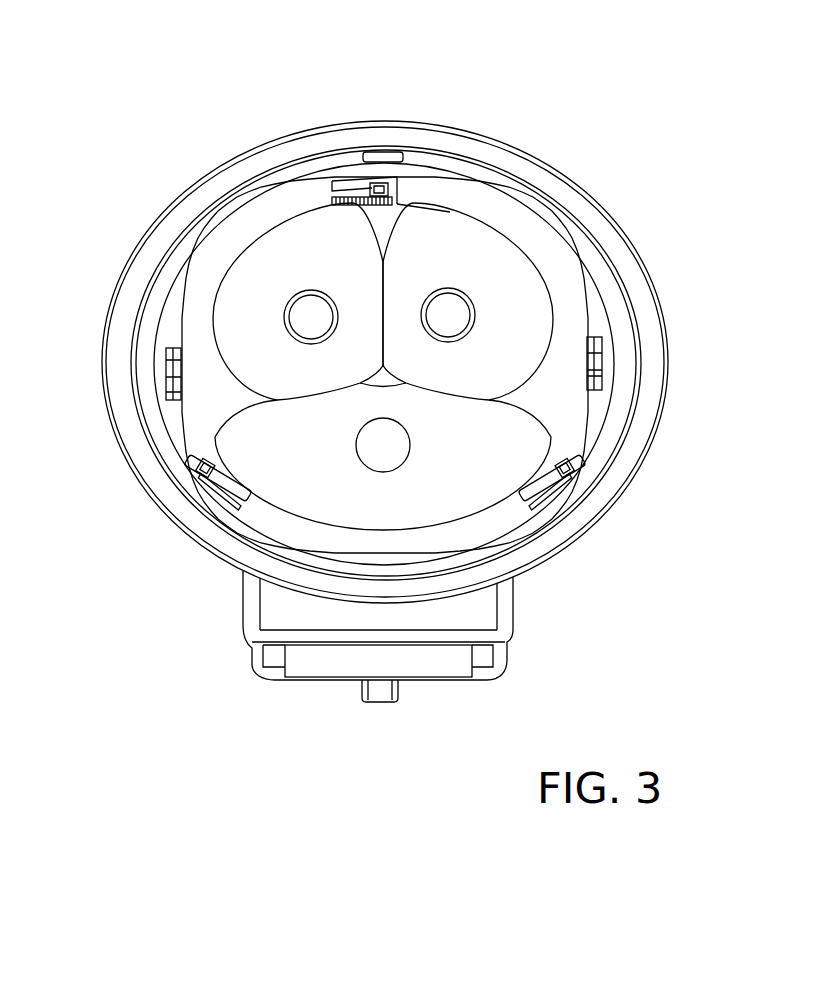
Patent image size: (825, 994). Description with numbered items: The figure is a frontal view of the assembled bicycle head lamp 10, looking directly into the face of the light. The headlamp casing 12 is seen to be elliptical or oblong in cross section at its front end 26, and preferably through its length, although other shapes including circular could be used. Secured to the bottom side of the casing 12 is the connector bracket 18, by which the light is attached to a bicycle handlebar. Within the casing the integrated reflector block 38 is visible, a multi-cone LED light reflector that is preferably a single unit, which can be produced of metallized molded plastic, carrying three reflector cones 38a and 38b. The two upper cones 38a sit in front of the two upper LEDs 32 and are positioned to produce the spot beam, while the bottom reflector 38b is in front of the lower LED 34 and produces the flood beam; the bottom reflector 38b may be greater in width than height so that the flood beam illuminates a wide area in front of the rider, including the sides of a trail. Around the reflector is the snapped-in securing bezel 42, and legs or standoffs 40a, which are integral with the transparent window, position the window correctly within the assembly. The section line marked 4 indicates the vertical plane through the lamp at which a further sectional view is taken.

The front bicycle light 10 is at (583, 125).
The housing or casing 12 is at (197, 182).
The connector bracket 18 is at (243, 628).
The front end 26 is at (402, 123).
The upper LEDs 32 is at (460, 310).
The lower LED 34 is at (390, 453).
The multi-cone LED light reflector 38 is at (466, 365).
The reflector cones 38a is at (312, 269).
The bottom reflector 38b is at (312, 462).
The legs or standoffs 40a is at (397, 190).
The snapped-in securing bezel 42 is at (518, 190).
The section line 4 is at (383, 37).